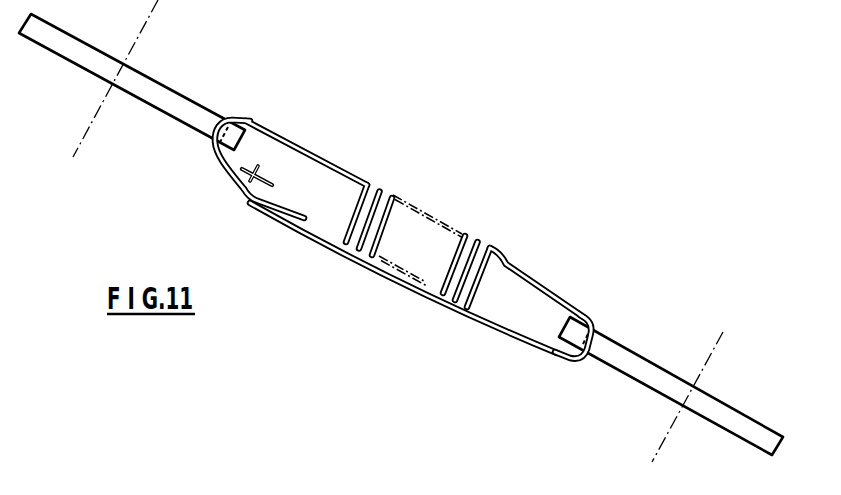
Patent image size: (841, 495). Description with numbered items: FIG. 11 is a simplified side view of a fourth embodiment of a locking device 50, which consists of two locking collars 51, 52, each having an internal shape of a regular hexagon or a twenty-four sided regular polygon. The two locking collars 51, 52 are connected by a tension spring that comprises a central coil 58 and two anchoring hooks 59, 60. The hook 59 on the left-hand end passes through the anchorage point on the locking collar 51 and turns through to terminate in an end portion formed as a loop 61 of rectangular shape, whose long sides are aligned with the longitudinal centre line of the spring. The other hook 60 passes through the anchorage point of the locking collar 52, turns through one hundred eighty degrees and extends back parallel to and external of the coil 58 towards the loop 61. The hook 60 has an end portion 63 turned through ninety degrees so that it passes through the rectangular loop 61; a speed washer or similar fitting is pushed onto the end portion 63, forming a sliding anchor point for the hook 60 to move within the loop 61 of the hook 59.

The locking device 50 is at (364, 326).
The locking collar 51 is at (174, 110).
The locking collar 52 is at (737, 421).
The central coil 58 is at (481, 246).
The anchoring hook 59 is at (255, 123).
The anchoring hook 60 is at (597, 283).
The loop 61 is at (244, 189).
The end portion 63 is at (264, 171).